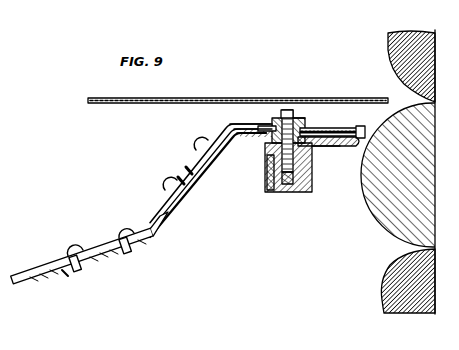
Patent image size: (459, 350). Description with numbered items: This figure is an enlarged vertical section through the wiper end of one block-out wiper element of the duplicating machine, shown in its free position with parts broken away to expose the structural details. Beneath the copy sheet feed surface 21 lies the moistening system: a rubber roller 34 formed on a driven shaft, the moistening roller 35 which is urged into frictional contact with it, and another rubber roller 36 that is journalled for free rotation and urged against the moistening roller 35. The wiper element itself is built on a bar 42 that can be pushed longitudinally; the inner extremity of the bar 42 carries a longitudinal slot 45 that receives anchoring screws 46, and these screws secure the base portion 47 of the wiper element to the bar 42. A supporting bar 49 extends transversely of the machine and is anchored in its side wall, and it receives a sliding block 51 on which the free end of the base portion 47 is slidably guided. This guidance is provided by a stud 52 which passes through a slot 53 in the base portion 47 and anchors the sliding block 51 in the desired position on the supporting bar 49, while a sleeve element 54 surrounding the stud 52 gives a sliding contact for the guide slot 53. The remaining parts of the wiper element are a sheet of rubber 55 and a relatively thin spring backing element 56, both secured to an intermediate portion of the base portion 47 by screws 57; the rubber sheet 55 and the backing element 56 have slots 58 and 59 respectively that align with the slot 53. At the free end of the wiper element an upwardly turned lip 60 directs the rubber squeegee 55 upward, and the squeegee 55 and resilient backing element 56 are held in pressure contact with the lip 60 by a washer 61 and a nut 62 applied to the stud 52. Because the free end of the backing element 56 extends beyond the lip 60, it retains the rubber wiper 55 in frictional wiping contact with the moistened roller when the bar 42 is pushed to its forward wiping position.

The copy sheet feed surface 21 is at (222, 97).
The rubber roller 34 is at (385, 57).
The moistening roller 35 is at (384, 216).
The rubber roller 36 is at (386, 306).
The bar 42 is at (22, 272).
The longitudinal slot 45 is at (60, 276).
The anchoring screws 46 is at (122, 233).
The base portion 47 is at (164, 236).
The supporting bar 49 is at (285, 194).
The sliding block 51 is at (266, 182).
The stud 52 is at (293, 110).
The slot 53 is at (273, 148).
The sleeve element 54 is at (313, 146).
The sheet of rubber 55 is at (364, 128).
The spring backing element 56 is at (348, 128).
The screws 57 is at (188, 150).
The slot 58 is at (262, 137).
The slot 59 is at (270, 126).
The upwardly turned lip 60 is at (358, 152).
The washer 61 is at (306, 123).
The nut 62 is at (281, 111).